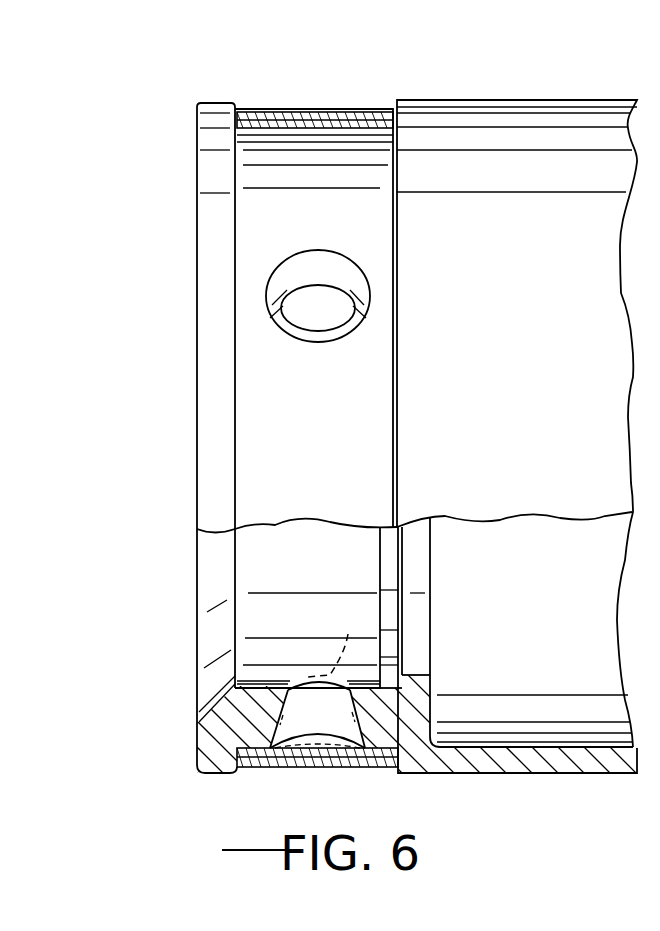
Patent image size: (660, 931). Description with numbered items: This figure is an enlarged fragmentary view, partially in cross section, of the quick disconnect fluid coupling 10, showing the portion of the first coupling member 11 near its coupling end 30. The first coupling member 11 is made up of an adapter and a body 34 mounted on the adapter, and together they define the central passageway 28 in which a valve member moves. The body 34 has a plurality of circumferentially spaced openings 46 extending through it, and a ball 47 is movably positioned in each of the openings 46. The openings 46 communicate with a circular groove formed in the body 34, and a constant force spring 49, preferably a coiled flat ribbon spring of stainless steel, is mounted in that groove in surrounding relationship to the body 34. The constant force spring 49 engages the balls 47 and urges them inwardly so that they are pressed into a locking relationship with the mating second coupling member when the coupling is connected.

The quick disconnect fluid coupling 10 is at (188, 241).
The first coupling member 11 is at (525, 100).
The central passageway 28 is at (418, 672).
The coupling end 30 is at (196, 404).
The body 34 is at (548, 776).
The circumferentially spaced openings 46 is at (330, 228).
The ball 47 is at (339, 636).
The constant force spring 49 is at (304, 111).